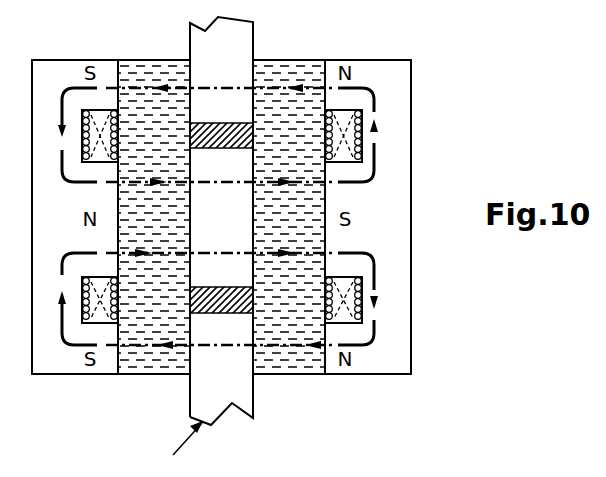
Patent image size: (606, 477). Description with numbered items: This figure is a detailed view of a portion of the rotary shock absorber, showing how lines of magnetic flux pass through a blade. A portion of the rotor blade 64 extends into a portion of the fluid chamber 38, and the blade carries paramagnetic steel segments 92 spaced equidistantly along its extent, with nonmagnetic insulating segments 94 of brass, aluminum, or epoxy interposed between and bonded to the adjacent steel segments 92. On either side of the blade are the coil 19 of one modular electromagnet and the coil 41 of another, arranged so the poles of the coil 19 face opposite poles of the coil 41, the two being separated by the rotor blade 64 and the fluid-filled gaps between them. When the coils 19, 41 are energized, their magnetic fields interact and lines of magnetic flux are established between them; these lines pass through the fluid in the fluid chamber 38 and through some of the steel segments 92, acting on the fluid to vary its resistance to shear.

The coil 19 is at (57, 370).
The fluid chamber 38 is at (290, 73).
The coil 41 is at (400, 379).
The rotor blade 64 is at (173, 443).
The steel segments 92 is at (217, 72).
The insulating segments 94 is at (253, 133).